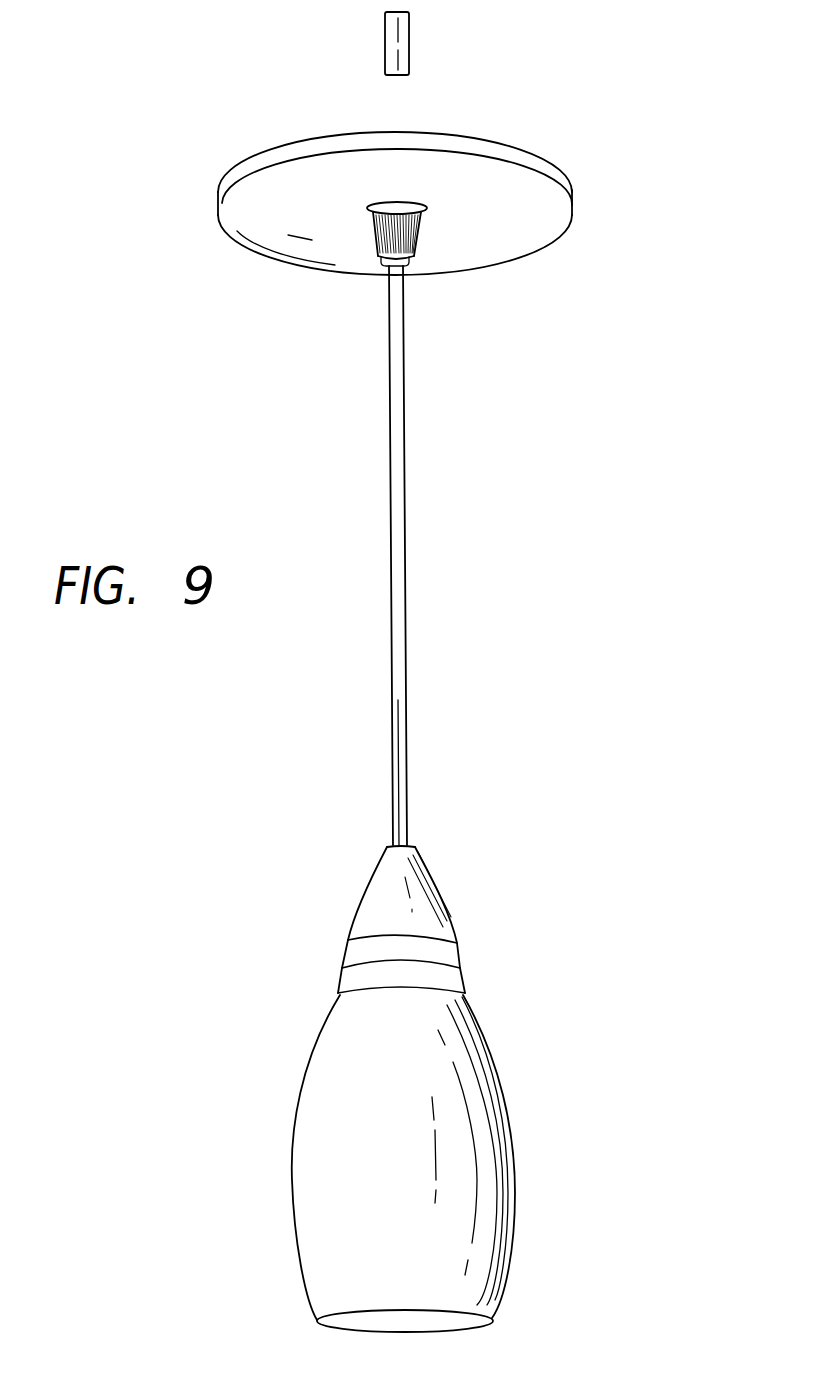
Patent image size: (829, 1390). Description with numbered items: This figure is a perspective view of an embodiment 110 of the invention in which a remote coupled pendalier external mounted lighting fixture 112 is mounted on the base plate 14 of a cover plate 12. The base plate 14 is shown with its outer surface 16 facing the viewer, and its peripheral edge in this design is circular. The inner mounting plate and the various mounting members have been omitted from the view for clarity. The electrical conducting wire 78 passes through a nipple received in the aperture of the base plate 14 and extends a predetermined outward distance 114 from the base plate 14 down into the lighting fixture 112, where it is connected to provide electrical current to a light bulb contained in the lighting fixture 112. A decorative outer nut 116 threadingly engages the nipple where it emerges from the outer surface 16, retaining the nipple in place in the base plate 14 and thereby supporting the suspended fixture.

The embodiment 110 is at (632, 771).
The electrical conducting wire 78 is at (409, 50).
The cover plate 12 is at (570, 192).
The base plate 14 is at (560, 215).
The outer surface 16 is at (525, 241).
The decorative outer nut 116 is at (414, 244).
The predetermined outward distance 114 is at (406, 485).
The remote coupled pendalier external mounted lighting fixture 112 is at (512, 1120).